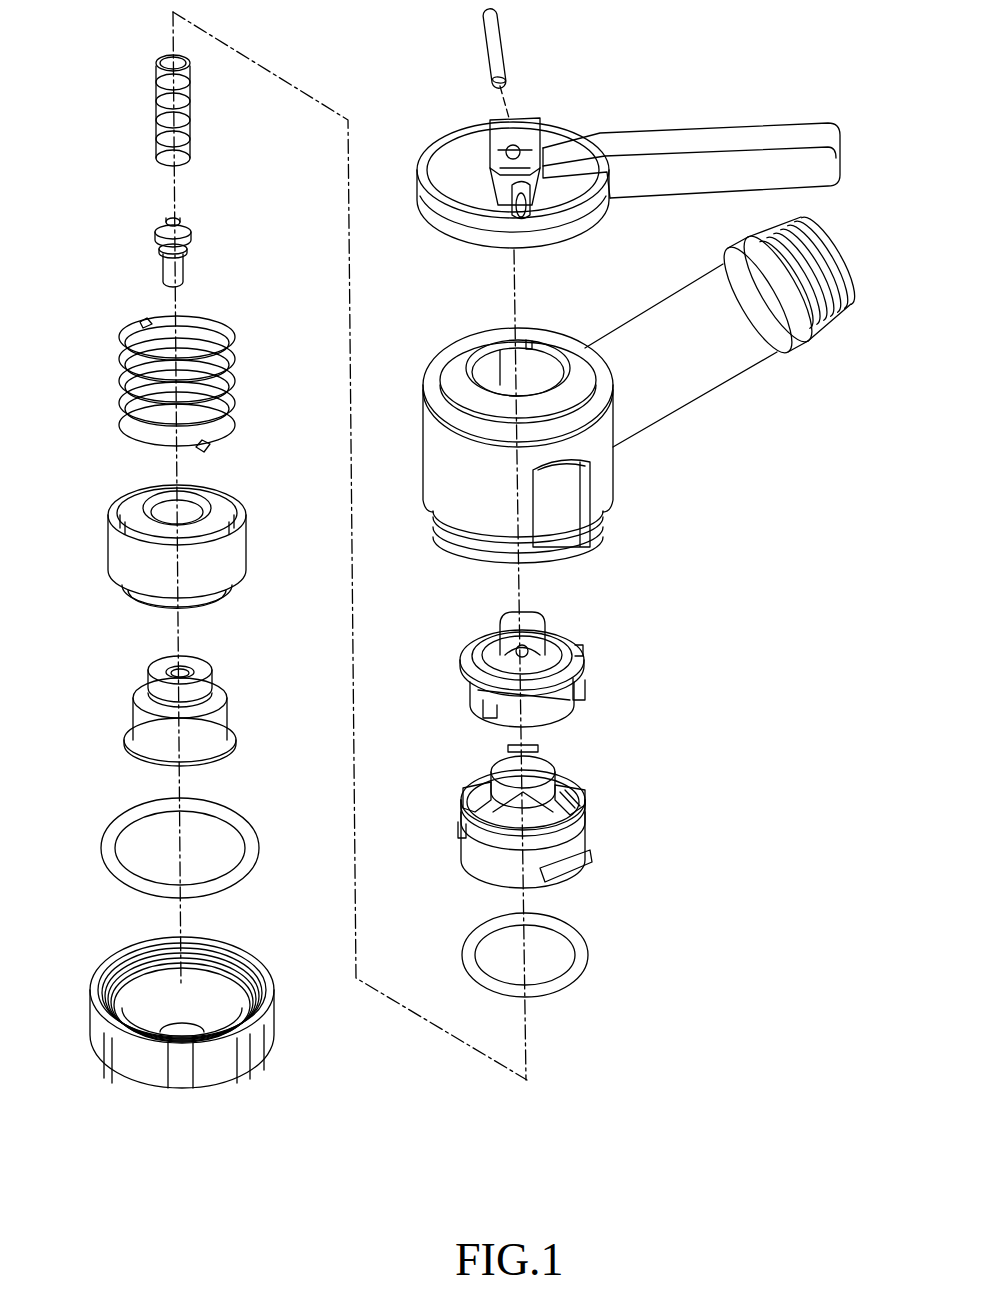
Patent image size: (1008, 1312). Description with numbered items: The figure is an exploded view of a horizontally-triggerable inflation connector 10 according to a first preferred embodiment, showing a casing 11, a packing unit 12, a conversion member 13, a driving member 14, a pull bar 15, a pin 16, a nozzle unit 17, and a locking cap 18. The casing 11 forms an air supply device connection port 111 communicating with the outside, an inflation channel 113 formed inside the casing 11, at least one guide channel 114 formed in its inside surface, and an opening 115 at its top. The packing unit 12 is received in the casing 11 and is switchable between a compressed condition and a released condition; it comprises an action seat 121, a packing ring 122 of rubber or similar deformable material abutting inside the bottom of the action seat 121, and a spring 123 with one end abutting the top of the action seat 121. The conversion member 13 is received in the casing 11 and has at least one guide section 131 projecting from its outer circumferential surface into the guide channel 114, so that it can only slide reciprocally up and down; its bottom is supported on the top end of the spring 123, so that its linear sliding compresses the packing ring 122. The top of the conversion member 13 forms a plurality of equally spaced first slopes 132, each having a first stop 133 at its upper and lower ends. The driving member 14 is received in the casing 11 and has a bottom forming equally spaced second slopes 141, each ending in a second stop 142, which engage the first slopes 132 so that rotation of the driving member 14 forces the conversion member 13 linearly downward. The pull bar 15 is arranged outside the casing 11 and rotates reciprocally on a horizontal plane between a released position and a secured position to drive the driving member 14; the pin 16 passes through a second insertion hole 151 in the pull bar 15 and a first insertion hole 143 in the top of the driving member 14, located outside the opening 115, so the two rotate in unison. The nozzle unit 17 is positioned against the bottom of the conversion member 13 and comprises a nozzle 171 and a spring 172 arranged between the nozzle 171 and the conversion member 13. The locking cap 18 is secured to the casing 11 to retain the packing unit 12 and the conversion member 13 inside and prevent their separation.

The horizontally-triggerable inflation connector 10 is at (390, 80).
The casing 11 is at (460, 465).
The air supply device connection port 111 is at (871, 288).
The inflation channel 113 is at (502, 366).
The guide channel 114 is at (594, 497).
The opening 115 is at (478, 356).
The packing unit 12 is at (225, 541).
The action seat 121 is at (230, 562).
The packing ring 122 is at (215, 711).
The spring 123 is at (222, 386).
The conversion member 13 is at (470, 861).
The guide section 131 is at (592, 858).
The first slopes 132 is at (565, 830).
The first stop 133 is at (476, 800).
The driving member 14 is at (470, 664).
The second slopes 141 is at (540, 705).
The second stop 142 is at (582, 687).
The first insertion hole 143 is at (532, 652).
The pull bar 15 is at (628, 145).
The second insertion hole 151 is at (508, 120).
The pin 16 is at (488, 42).
The nozzle unit 17 is at (235, 171).
The nozzle 171 is at (216, 252).
The spring 172 is at (190, 121).
The locking cap 18 is at (268, 1029).